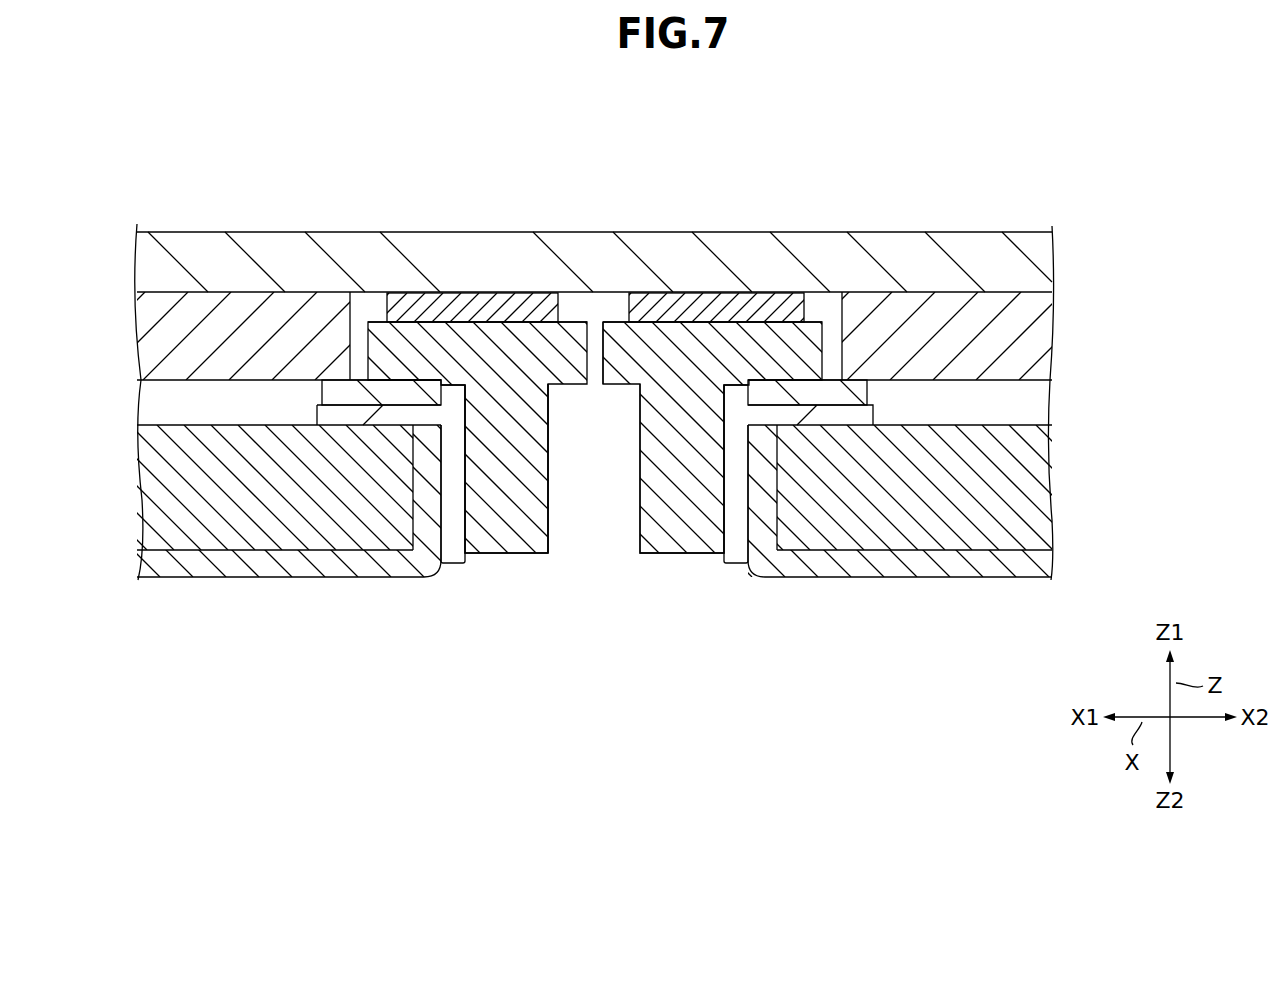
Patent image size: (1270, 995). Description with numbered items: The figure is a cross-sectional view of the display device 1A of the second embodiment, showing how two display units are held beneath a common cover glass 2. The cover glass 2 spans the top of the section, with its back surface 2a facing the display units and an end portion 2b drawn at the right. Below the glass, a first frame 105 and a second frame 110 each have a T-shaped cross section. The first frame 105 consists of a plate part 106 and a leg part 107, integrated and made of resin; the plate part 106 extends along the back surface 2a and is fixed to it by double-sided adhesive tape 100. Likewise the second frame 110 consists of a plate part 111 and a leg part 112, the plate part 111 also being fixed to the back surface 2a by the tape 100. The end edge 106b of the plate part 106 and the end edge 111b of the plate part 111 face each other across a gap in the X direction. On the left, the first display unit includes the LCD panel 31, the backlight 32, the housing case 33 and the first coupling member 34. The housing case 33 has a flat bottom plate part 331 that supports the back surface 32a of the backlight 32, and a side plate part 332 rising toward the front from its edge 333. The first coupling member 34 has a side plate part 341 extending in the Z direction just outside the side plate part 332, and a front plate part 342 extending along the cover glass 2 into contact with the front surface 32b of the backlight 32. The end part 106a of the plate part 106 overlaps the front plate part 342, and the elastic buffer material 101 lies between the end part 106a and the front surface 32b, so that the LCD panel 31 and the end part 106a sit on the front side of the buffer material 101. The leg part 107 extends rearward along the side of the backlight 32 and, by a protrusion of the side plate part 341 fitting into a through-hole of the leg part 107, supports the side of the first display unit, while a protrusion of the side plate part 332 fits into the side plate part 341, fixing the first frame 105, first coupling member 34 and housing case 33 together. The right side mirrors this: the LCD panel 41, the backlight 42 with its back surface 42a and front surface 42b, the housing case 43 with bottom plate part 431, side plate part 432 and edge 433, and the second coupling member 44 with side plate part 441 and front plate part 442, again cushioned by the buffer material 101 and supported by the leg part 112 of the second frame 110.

The display device 1A is at (646, 120).
The cover glass 2 is at (966, 247).
The back surface of the cover glass 2a is at (1030, 337).
The side surface of lid 2b is at (1051, 300).
The LCD panel 31 is at (158, 336).
The backlight 32 is at (273, 409).
The back surface of the backlight 32a is at (199, 552).
The front surface of the backlight 32b is at (220, 420).
The housing case 33 is at (298, 551).
The bottom plate part 331 is at (312, 570).
The side plate part 332 is at (421, 494).
The edge 333 is at (428, 565).
The first coupling member 34 is at (403, 437).
The side plate part 341 is at (455, 526).
The front plate part 342 is at (340, 417).
The LCD panel 41 is at (1025, 336).
The backlight 42 is at (909, 410).
The back surface of the backlight 42a is at (895, 552).
The front surface of the backlight 42b is at (983, 423).
The housing case 43 is at (890, 546).
The bottom plate part 431 is at (957, 570).
The side plate part 432 is at (762, 483).
The edge 433 is at (755, 569).
The second coupling member 44 is at (772, 536).
The side plate part 441 is at (740, 558).
The front plate part 442 is at (842, 402).
The double-sided adhesive tape 100 is at (441, 308).
The elastic buffer material 101 is at (330, 392).
The first frame 105 is at (495, 320).
The plate part 106 is at (544, 362).
The end part 106a is at (408, 362).
The end edge 106b is at (589, 386).
The leg part 107 is at (517, 528).
The second frame 110 is at (757, 317).
The plate part 111 is at (817, 330).
The end edge 111b is at (600, 383).
The leg part 112 is at (675, 528).